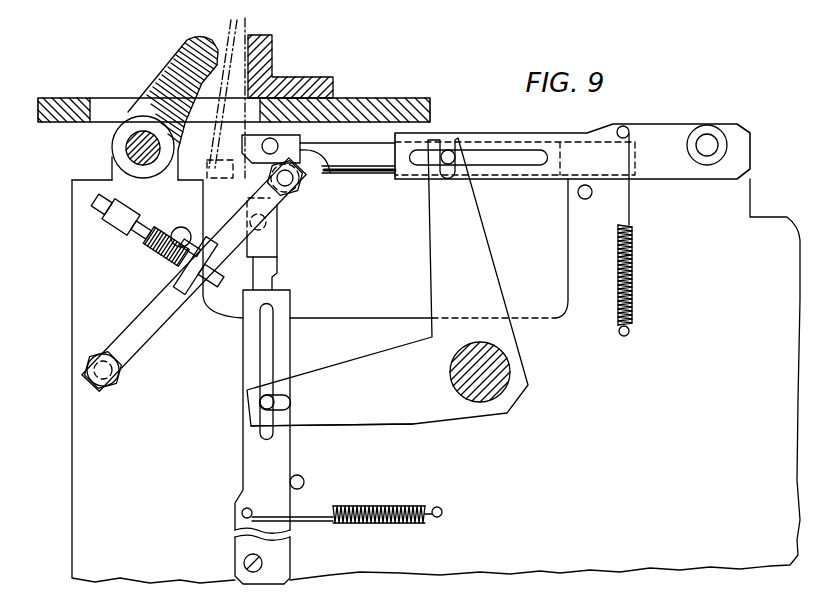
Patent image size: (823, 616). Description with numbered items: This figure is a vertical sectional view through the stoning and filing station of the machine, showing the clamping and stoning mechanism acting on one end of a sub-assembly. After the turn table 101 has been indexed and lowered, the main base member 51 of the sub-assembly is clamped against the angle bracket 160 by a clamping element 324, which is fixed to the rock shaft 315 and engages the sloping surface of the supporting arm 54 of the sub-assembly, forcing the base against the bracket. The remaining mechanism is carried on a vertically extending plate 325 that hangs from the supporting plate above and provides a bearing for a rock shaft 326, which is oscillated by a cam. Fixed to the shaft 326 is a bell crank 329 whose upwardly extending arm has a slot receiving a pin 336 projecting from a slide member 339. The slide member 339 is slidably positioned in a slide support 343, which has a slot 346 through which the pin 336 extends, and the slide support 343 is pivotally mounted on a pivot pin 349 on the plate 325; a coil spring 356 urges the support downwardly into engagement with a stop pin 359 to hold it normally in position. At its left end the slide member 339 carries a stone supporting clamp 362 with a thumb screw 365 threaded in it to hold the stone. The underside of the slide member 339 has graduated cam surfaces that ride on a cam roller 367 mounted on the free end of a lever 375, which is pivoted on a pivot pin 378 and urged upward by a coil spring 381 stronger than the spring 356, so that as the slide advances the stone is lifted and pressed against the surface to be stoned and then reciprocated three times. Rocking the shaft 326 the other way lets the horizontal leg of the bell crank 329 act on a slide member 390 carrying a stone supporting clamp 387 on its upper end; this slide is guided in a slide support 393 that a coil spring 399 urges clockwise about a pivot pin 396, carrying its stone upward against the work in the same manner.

The main base member 51 is at (250, 26).
The supporting arm 54 is at (233, 43).
The turn table 101 is at (412, 98).
The angle bracket 160 is at (282, 88).
The rock shaft 315 is at (129, 146).
The clamping element 324 is at (172, 73).
The vertically extending plate 325 is at (563, 557).
The rock shaft 326 is at (510, 385).
The bell crank 329 is at (388, 418).
The pin 336 is at (448, 156).
The slide member 339 is at (373, 166).
The slide support 343 is at (645, 132).
The slot 346 is at (500, 150).
The pivot pin 349 is at (707, 144).
The coil spring 356 is at (633, 260).
The stop pin 359 is at (578, 192).
The stone supporting clamp 362 is at (328, 165).
The thumb screw 365 is at (272, 145).
The cam roller 367 is at (295, 198).
The lever 375 is at (168, 322).
The pivot pin 378 is at (103, 358).
The coil spring 381 is at (152, 258).
The stone supporting clamp 387 is at (263, 238).
The slide member 390 is at (270, 268).
The slide support 393 is at (291, 340).
The pivot pin 396 is at (244, 560).
The coil spring 399 is at (380, 505).